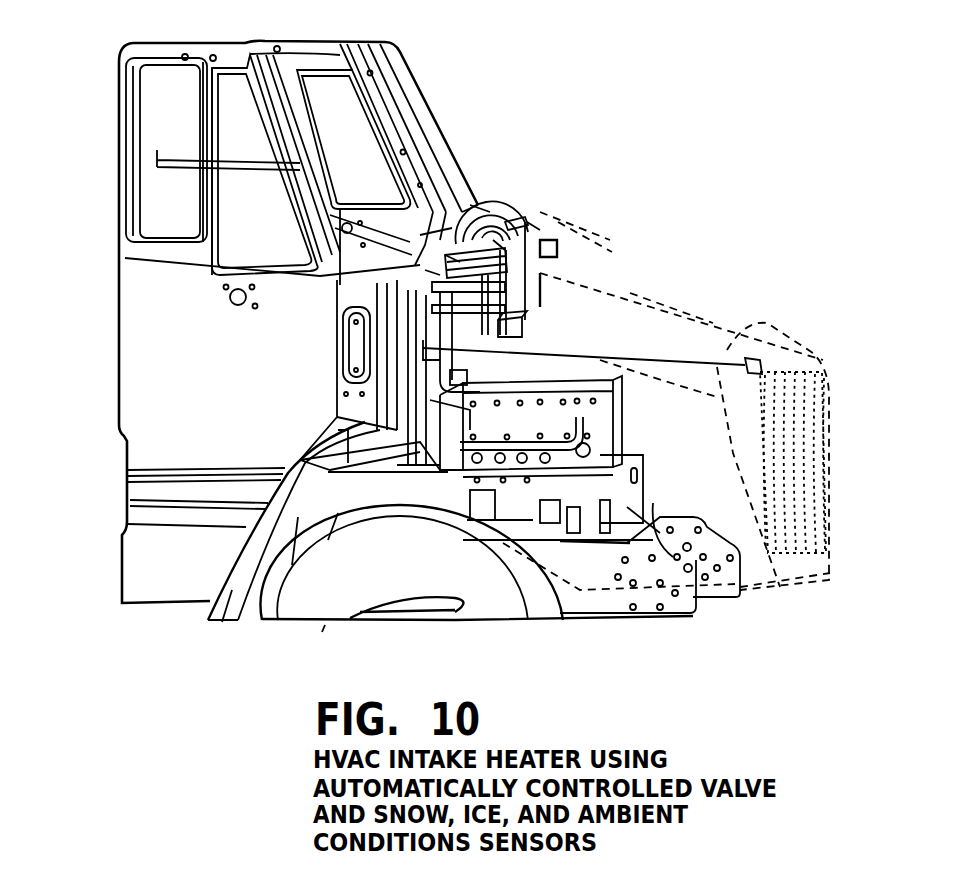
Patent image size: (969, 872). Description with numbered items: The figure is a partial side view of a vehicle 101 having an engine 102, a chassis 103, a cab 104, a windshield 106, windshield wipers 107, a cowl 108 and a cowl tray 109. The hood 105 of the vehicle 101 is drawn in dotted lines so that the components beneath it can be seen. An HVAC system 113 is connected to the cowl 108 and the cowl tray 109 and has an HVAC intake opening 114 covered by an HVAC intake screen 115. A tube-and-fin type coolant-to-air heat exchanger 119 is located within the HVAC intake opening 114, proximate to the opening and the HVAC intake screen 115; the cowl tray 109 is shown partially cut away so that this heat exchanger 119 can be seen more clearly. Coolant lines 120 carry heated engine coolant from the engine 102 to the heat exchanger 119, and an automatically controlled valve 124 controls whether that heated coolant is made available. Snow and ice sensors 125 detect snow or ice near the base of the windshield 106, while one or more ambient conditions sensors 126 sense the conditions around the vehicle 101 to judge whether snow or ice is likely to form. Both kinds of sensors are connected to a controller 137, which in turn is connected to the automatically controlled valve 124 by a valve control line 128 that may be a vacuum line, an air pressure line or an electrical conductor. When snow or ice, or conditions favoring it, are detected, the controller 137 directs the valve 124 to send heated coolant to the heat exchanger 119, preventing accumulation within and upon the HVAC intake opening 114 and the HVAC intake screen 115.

The vehicle 101 is at (155, 322).
The engine 102 is at (577, 417).
The chassis 103 is at (170, 553).
The cab 104 is at (150, 380).
The hood 105 is at (818, 487).
The windshield 106 is at (383, 130).
The cowl 108 is at (385, 352).
The windshield wipers 107 is at (417, 232).
The cowl tray 109 is at (548, 250).
The HVAC system 113 is at (455, 365).
The HVAC intake opening 114 is at (433, 266).
The HVAC intake screen 115 is at (452, 258).
The tube-and-fin type coolant-to-air heat exchanger 119 is at (527, 328).
The coolant lines 120 is at (455, 400).
The automatically controlled valve 124 is at (470, 413).
The snow and ice sensors 125 is at (495, 240).
The ambient conditions sensors 126 is at (770, 367).
The valve control line 128 is at (480, 385).
The controller 137 is at (503, 362).